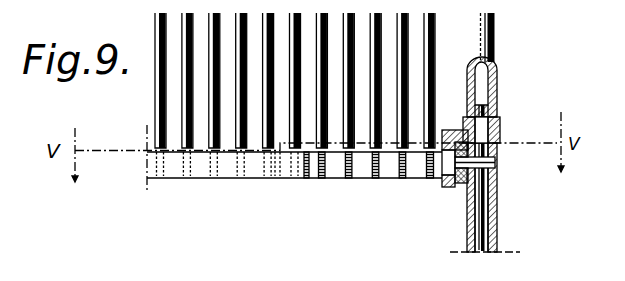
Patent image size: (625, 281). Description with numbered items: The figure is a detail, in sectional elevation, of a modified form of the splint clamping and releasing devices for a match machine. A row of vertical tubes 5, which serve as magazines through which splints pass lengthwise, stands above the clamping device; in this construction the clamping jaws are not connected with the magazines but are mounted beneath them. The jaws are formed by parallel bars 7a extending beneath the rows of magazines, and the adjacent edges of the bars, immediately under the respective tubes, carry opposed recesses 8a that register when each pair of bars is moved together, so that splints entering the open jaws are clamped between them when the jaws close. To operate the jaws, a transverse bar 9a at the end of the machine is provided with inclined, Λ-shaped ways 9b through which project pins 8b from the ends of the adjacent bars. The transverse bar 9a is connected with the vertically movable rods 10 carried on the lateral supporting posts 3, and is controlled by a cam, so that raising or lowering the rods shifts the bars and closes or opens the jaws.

The vertical tubes 5 is at (440, 43).
The posts or standards 3 is at (497, 42).
The clamping jaws 7a is at (284, 179).
The opposed recesses 8a is at (376, 178).
The pins 8b is at (403, 178).
The transverse bar 9a is at (462, 183).
The ways 9b is at (470, 156).
The vertically movable rods 10 is at (485, 213).